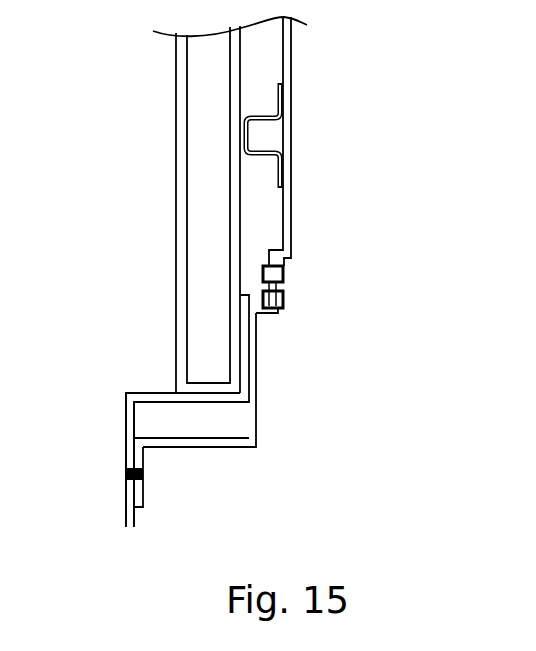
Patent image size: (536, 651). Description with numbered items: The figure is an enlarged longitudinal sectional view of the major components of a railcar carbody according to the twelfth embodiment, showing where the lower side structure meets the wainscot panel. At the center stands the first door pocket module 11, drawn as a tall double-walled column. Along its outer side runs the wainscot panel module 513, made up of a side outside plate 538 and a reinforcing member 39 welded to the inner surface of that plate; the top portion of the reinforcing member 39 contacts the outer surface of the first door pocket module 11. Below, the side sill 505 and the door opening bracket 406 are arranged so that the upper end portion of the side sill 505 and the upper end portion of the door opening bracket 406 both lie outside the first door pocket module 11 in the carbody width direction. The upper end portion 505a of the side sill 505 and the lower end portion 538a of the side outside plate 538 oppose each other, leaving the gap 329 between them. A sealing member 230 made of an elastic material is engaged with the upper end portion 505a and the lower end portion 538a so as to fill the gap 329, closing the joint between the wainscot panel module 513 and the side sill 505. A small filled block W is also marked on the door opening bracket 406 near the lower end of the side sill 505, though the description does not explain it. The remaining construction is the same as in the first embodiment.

The first door pocket module 11 is at (175, 132).
The reinforcing member 39 is at (264, 151).
The wainscot panel module 513 is at (368, 141).
The side outside plate 538 is at (291, 238).
The lower end portion of side outside plate 538a is at (262, 274).
The gap 329 is at (283, 283).
The sealing member 230 is at (283, 290).
The upper end portion of side sill 505a is at (279, 313).
The side sill 505 is at (192, 447).
The door opening bracket 406 is at (125, 423).
The weld W is at (125, 477).